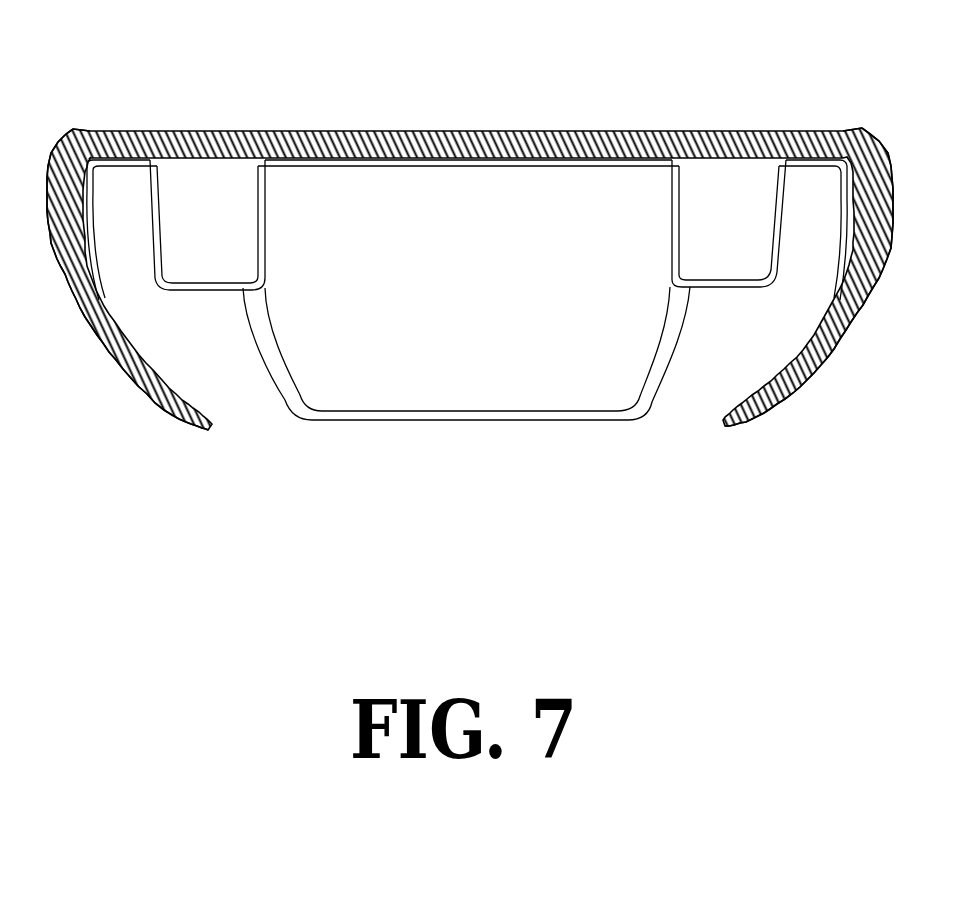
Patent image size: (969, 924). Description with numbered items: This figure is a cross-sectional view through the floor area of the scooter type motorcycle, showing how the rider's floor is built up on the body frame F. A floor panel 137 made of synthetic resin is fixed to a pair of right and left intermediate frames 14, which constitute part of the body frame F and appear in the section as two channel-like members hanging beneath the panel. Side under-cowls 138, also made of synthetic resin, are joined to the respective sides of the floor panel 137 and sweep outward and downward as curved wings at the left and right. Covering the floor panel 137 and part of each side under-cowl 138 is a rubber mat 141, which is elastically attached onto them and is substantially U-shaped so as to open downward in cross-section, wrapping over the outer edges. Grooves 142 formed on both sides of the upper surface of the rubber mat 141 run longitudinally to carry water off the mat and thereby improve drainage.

The rubber mat 141 is at (452, 130).
The grooves 142 is at (260, 130).
The floor panel 137 is at (513, 160).
The intermediate frames 14 is at (218, 292).
The side under-cowls 138 is at (107, 360).
The body frame F is at (290, 428).